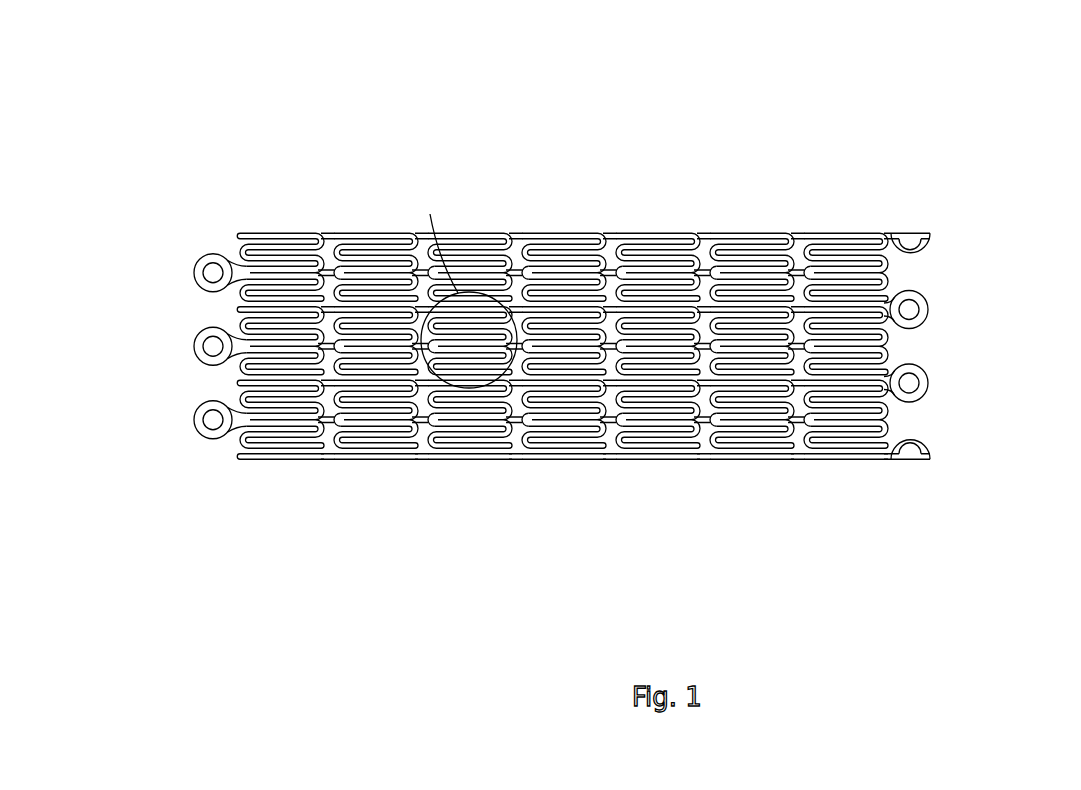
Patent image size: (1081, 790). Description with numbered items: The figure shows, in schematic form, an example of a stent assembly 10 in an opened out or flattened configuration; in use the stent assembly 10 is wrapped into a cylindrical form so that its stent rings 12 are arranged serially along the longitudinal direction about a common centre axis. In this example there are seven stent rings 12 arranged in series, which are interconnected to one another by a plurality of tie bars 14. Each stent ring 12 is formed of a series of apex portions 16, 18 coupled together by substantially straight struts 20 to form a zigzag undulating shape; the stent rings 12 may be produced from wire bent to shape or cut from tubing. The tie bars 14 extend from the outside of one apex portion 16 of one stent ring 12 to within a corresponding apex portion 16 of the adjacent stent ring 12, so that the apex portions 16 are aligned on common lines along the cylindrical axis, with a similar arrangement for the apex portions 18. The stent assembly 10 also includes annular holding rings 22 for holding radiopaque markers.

The stent assembly 10 is at (572, 322).
The stent ring 12 is at (570, 373).
The tie bar 14 is at (405, 250).
The apex portion 16 is at (524, 240).
The apex portion 18 is at (790, 243).
The strut 20 is at (762, 238).
The annular holding ring 22 is at (198, 269).